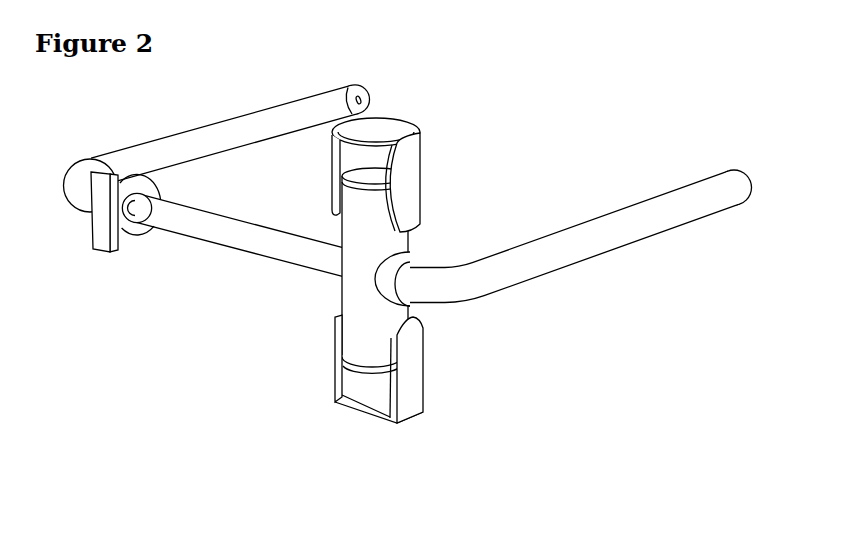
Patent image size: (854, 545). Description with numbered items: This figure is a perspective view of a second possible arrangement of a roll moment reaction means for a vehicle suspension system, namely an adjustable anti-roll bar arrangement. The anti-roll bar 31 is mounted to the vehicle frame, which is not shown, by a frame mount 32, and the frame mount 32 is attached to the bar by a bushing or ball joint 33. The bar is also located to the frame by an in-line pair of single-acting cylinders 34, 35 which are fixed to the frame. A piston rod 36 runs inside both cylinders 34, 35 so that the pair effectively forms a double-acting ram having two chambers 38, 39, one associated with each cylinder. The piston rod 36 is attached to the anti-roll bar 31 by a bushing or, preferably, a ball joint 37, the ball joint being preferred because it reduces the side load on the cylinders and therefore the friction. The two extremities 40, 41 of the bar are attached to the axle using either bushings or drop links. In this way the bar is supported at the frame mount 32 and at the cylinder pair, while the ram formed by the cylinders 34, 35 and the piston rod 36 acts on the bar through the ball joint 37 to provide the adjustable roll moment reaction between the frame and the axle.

The anti-roll bar 31 is at (228, 128).
The frame mount 32 is at (97, 228).
The bushing or ball joint 33 is at (128, 220).
The single-acting cylinder 34 is at (424, 99).
The single-acting cylinder 35 is at (414, 447).
The piston rod 36 is at (353, 293).
The ball joint 37 is at (408, 250).
The chamber 38 is at (372, 158).
The chamber 39 is at (353, 380).
The extremity of the bar 40 is at (360, 90).
The extremity of the bar 41 is at (746, 185).